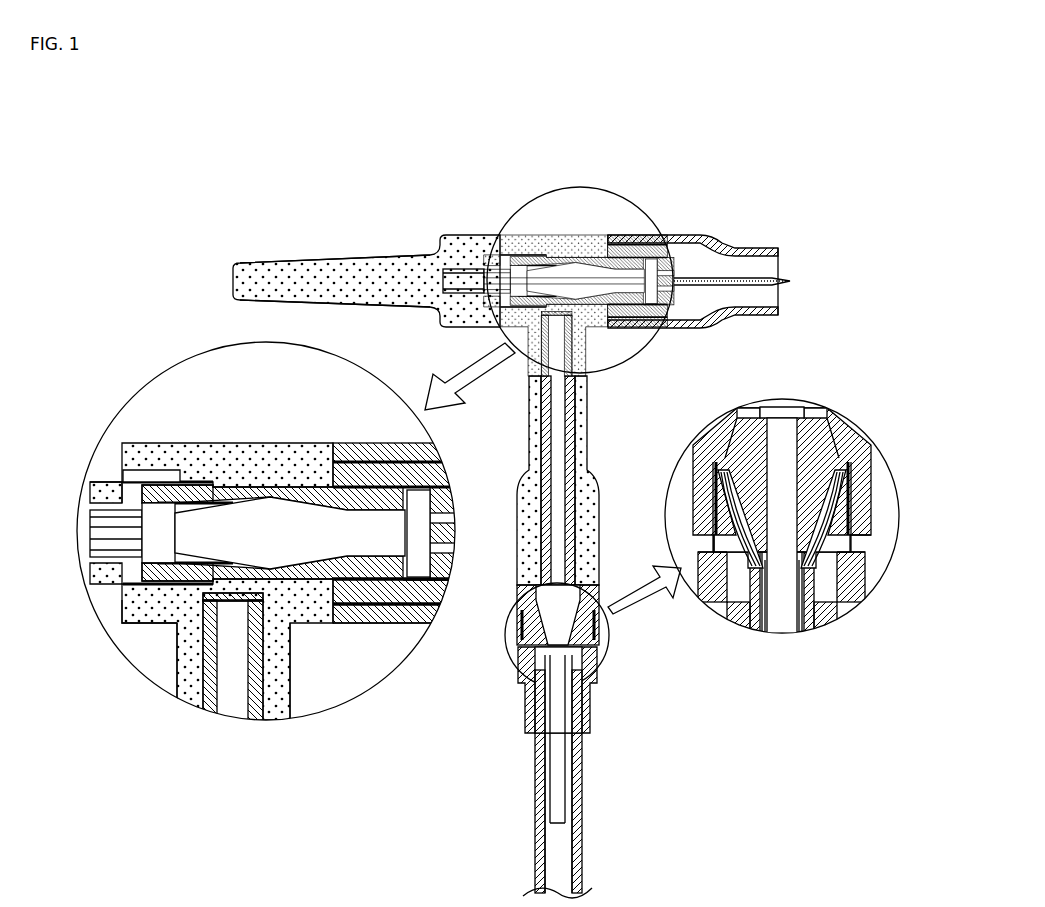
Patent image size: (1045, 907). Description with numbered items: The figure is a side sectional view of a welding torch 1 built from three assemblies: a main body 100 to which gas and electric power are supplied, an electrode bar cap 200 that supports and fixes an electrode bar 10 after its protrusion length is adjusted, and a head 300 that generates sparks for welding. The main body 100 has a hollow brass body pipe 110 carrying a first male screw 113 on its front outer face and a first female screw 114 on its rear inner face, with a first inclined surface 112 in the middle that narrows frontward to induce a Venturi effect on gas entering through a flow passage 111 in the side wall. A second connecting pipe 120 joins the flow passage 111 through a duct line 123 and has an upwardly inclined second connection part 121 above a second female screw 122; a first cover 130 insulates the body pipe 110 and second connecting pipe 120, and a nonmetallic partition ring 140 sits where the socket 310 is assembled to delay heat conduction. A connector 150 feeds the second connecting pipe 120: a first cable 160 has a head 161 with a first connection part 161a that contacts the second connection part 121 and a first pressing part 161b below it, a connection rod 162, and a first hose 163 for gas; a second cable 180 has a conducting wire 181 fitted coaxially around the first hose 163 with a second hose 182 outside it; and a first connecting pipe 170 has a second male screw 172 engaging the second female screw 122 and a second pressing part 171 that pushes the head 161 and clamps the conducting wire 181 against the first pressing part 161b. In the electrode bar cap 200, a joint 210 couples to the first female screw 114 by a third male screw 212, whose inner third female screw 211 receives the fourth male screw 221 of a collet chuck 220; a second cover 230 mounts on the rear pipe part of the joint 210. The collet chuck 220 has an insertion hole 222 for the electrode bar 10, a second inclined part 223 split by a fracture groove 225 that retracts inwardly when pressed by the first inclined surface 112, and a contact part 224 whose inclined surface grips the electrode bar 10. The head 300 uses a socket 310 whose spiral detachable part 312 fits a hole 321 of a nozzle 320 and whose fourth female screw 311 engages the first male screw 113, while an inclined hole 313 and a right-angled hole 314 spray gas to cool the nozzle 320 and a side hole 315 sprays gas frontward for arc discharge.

The torch 1 is at (455, 158).
The electrode bar 10 is at (779, 279).
The main body 100 is at (602, 396).
The body pipe 110 is at (530, 238).
The flow passage 111 is at (190, 660).
The first inclined surface 112 is at (338, 460).
The first male screw 113 is at (370, 630).
The first female screw 114 is at (140, 640).
The second connecting pipe 120 is at (606, 582).
The second connection part 121 is at (752, 430).
The second female screw 122 is at (865, 480).
The duct line 123 is at (805, 425).
The first cover 130 is at (600, 483).
The partition ring 140 is at (608, 244).
The connector 150 is at (618, 677).
The first cable 160 is at (587, 632).
The head 161 is at (782, 400).
The first connection part 161a is at (832, 440).
The first pressing part 161b is at (862, 525).
The connection rod 162 is at (772, 635).
The first hose 163 is at (800, 636).
The first connecting pipe 170 is at (598, 710).
The second pressing part 171 is at (725, 432).
The second male screw 172 is at (865, 565).
The second cable 180 is at (583, 836).
The conducting wire 181 is at (830, 620).
The second hose 182 is at (822, 625).
The electrode bar cap 200 is at (375, 243).
The joint 210 is at (462, 268).
The third female screw 211 is at (122, 456).
The third male screw 212 is at (175, 470).
The collet chuck 220 is at (556, 244).
The fourth male screw 221 is at (205, 445).
The insertion hole 222 is at (125, 538).
The second inclined part 223 is at (305, 462).
The contact part 224 is at (127, 575).
The fracture groove 225 is at (326, 690).
The second cover 230 is at (292, 262).
The head 300 is at (743, 224).
The socket 310 is at (643, 236).
The fourth female screw 311 is at (450, 460).
The detachable part 312 is at (395, 625).
The inclined hole 313 is at (445, 600).
The right-angled hole 314 is at (430, 615).
The side hole 315 is at (460, 580).
The nozzle 320 is at (708, 236).
The hole 321 is at (460, 530).